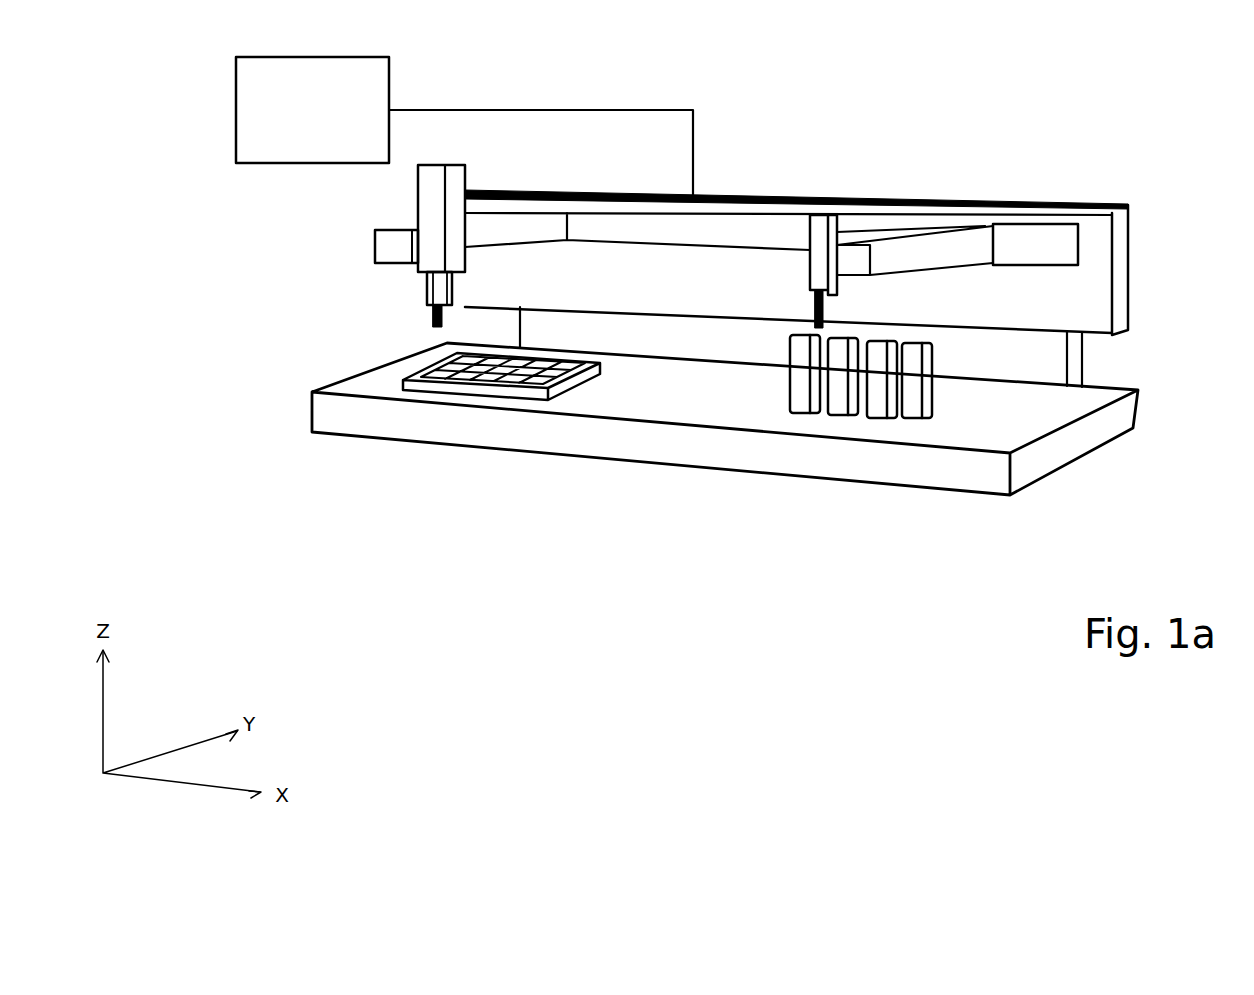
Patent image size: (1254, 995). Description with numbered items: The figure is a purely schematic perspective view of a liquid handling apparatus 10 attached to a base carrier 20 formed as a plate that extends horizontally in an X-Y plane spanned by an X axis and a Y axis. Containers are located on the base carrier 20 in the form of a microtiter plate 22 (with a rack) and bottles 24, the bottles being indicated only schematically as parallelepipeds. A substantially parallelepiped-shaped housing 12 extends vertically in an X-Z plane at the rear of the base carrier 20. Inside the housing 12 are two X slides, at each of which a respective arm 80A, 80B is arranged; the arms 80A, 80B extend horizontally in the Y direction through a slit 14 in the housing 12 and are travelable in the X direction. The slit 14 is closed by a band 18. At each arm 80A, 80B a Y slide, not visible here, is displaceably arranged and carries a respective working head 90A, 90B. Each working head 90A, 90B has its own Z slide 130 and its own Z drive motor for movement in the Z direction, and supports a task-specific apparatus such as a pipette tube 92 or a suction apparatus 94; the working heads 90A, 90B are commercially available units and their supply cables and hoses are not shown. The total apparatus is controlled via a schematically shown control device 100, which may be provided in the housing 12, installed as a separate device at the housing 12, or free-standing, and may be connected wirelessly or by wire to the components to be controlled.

The liquid handling apparatus 10 is at (957, 108).
The housing 12 is at (765, 196).
The slit 14 is at (1058, 248).
The band 18 is at (793, 233).
The base carrier 20 is at (630, 443).
The microtiter plate 22 is at (455, 387).
The bottles 24 is at (800, 408).
The arm 80A is at (925, 250).
The arm 80B is at (390, 248).
The working head 90A is at (837, 222).
The working head 90B is at (437, 252).
The pipette tube 92 is at (820, 313).
The suction apparatus 94 is at (437, 320).
The control device 100 is at (464, 126).
The Z slide 130 is at (427, 293).